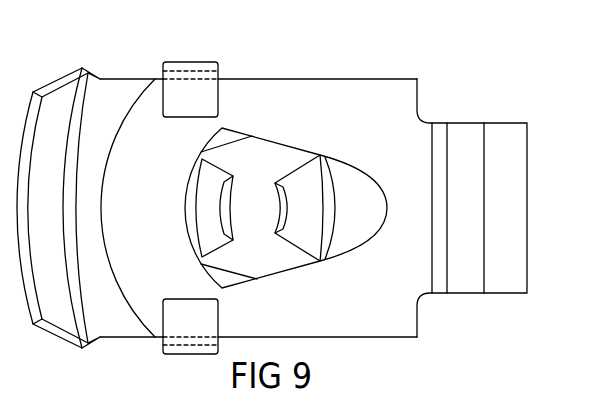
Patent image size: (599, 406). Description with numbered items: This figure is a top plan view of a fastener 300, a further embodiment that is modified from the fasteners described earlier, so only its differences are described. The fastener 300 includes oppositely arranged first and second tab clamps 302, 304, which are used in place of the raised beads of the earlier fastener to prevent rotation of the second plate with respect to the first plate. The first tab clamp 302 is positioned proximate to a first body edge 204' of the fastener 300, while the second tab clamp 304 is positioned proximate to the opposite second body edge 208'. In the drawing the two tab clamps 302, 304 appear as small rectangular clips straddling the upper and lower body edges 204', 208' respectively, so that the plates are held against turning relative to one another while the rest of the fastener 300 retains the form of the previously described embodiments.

The fastener 300 is at (428, 72).
The first body edge 204' is at (258, 47).
The second body edge 208' is at (258, 359).
The first tab clamp 302 is at (170, 88).
The second tab clamp 304 is at (200, 329).